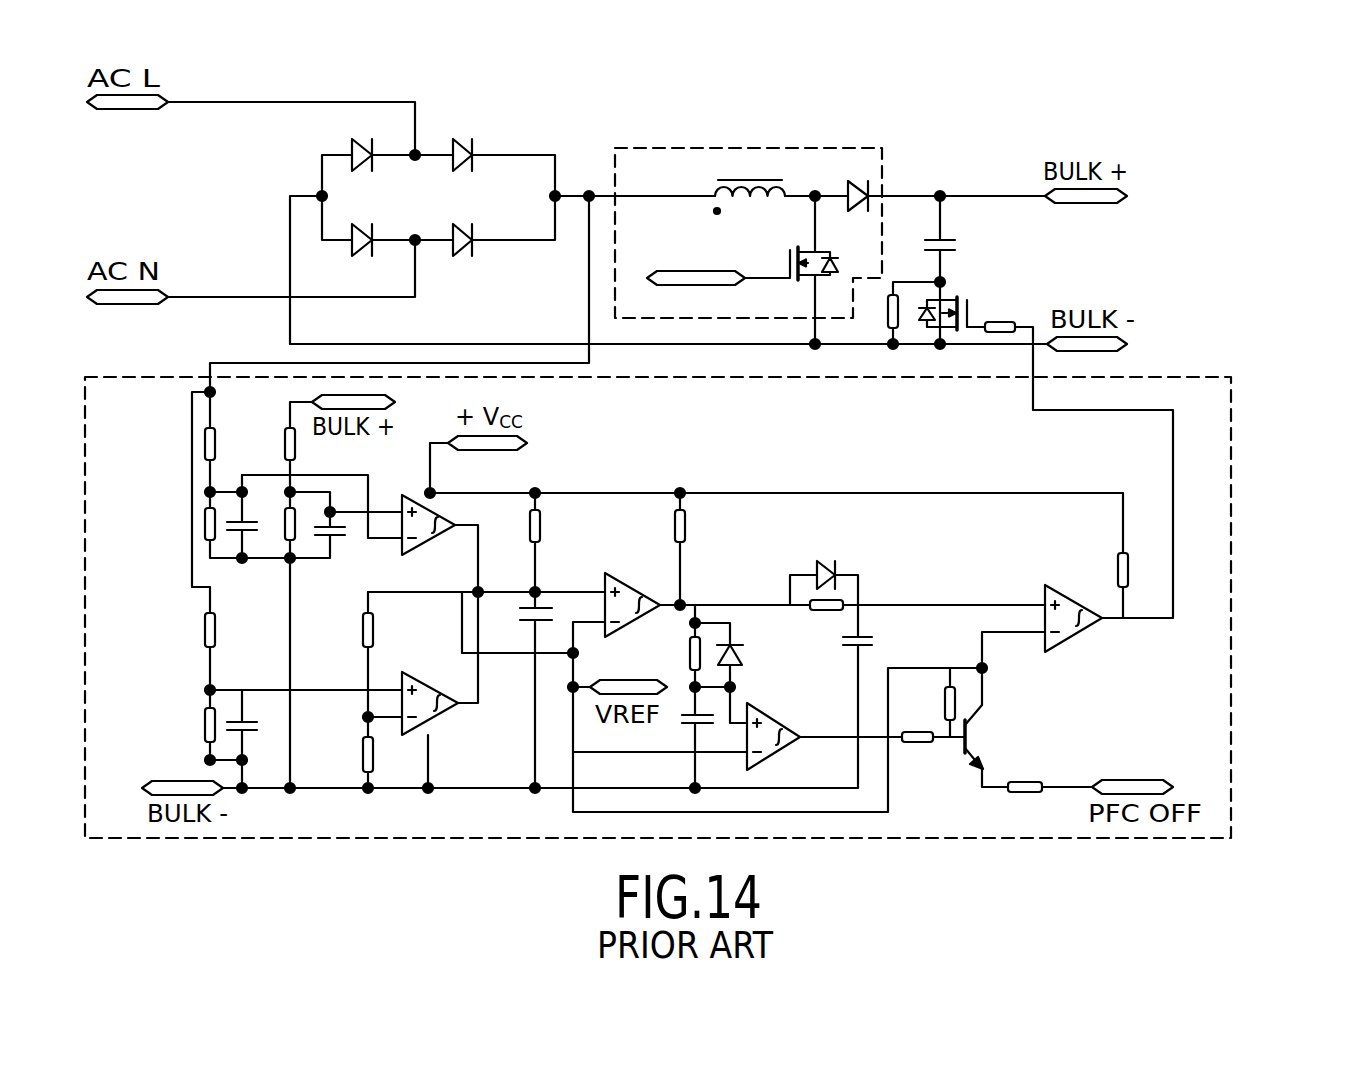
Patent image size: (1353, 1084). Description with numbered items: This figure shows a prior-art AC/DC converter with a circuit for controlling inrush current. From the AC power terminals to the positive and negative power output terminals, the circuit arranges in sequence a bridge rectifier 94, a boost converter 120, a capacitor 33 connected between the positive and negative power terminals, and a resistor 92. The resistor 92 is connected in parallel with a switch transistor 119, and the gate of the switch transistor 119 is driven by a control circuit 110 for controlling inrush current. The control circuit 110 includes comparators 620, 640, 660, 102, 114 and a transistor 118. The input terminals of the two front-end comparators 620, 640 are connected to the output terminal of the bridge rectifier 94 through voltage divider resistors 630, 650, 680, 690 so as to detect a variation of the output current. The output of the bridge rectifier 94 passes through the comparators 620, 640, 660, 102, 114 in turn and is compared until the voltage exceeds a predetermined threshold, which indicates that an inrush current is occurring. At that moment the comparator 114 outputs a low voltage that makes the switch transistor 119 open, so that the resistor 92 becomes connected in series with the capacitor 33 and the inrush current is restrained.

The bridge rectifier 94 is at (424, 142).
The boost converter 120 is at (775, 148).
The capacitor 33 is at (956, 240).
The switch transistor 119 is at (972, 303).
The resistor 92 is at (886, 322).
The control circuit 110 is at (1231, 470).
The voltage divider resistor 630 is at (205, 445).
The voltage divider resistor 650 is at (205, 530).
The comparator 620 is at (378, 556).
The comparator 660 is at (635, 573).
The voltage divider resistor 680 is at (205, 628).
The voltage divider resistor 690 is at (205, 720).
The comparator 640 is at (437, 716).
The comparator 102 is at (776, 718).
The comparator 114 is at (1068, 638).
The transistor 118 is at (985, 745).